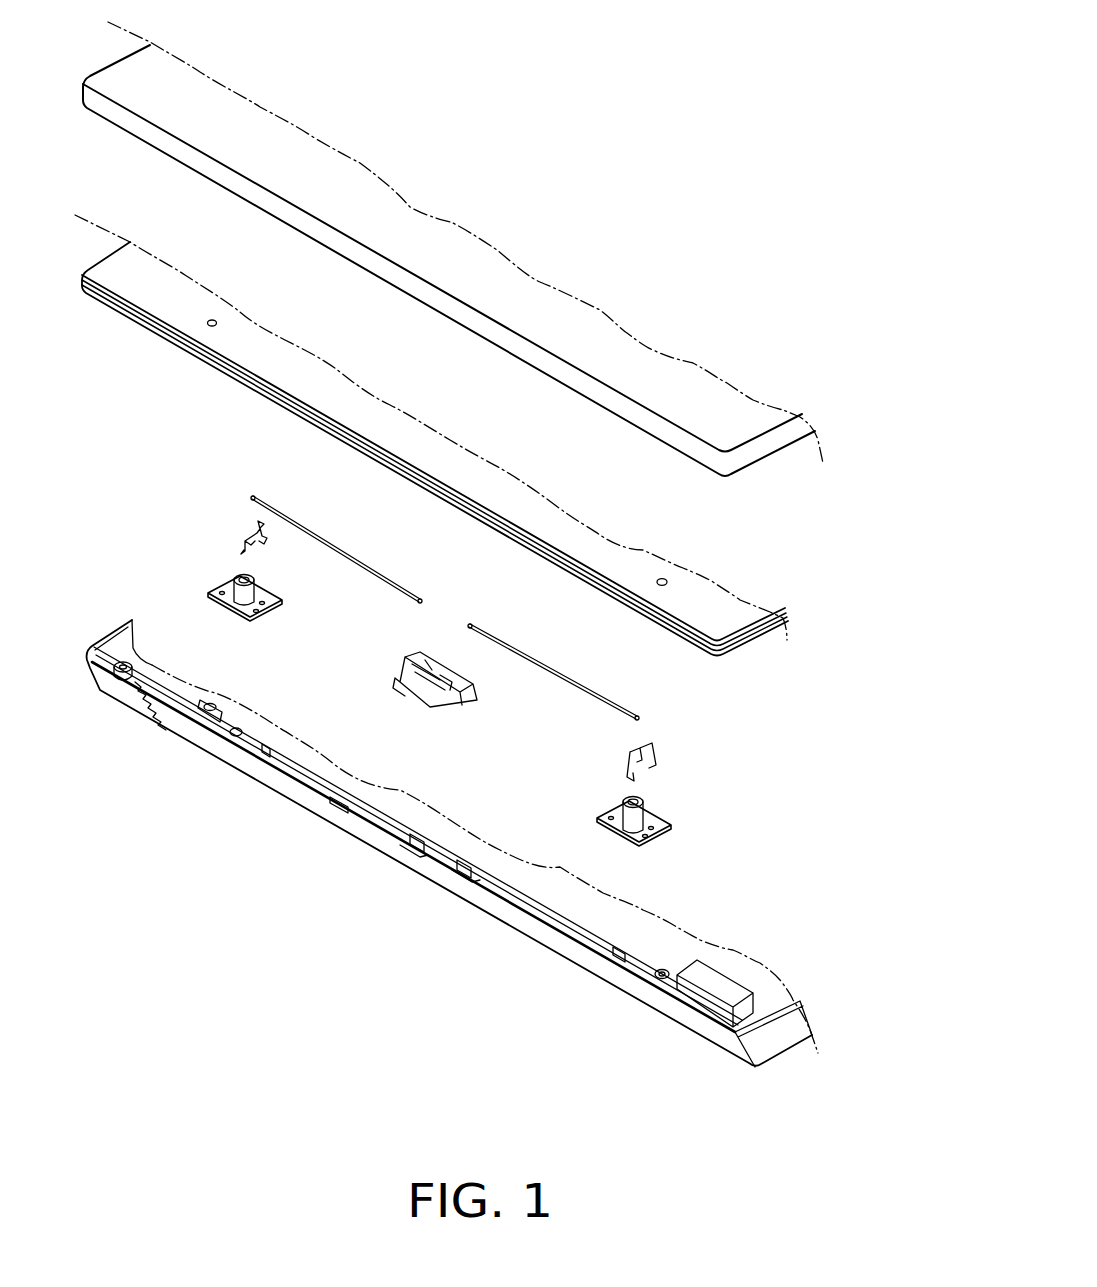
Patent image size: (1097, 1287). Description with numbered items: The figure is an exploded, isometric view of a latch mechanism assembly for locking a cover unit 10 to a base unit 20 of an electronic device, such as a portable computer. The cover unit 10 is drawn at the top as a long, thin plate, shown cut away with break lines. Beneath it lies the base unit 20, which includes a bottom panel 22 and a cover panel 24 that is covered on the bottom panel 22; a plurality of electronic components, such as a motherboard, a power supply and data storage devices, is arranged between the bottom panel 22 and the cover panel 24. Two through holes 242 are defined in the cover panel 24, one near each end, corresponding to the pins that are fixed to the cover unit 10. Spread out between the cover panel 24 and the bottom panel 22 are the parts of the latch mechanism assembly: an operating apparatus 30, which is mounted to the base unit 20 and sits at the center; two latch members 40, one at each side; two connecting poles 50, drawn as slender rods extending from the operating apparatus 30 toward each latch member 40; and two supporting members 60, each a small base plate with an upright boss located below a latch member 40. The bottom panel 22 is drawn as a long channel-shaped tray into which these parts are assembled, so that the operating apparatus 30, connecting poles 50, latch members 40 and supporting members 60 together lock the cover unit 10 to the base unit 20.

The cover unit 10 is at (750, 410).
The base unit 20 is at (882, 748).
The bottom panel 22 is at (710, 955).
The cover panel 24 is at (474, 490).
The through hole 242 is at (207, 323).
The operating apparatus 30 is at (449, 725).
The latch member 40 is at (257, 524).
The connecting pole 50 is at (318, 530).
The supporting member 60 is at (268, 605).